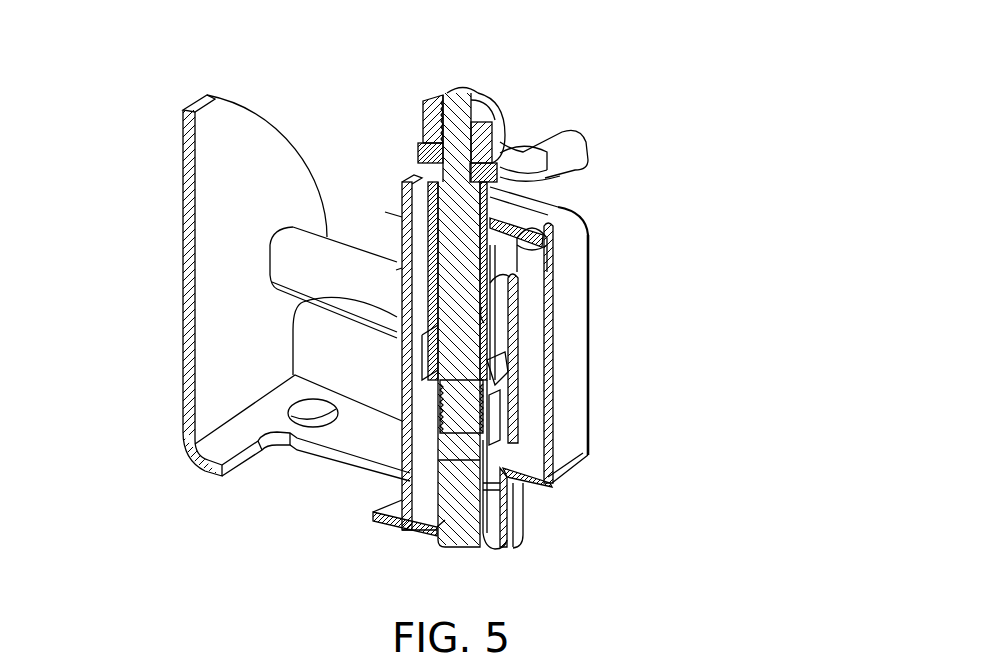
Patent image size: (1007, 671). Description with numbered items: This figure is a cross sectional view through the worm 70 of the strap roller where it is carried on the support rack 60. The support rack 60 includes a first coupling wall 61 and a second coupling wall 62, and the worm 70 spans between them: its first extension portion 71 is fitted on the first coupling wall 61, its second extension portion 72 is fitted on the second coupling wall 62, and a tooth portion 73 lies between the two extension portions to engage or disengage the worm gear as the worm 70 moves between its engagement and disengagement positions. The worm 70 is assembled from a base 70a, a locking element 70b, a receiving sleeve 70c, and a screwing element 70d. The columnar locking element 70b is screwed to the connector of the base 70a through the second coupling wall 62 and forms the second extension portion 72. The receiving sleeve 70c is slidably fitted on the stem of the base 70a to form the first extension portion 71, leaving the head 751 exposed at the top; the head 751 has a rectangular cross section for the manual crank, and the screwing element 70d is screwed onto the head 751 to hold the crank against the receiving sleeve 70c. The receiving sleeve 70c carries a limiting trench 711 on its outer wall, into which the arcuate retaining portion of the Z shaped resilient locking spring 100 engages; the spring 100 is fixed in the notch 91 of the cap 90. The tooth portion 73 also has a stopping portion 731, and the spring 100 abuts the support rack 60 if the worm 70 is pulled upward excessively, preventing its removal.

The worm 70 is at (463, 86).
The head 751 is at (422, 125).
The first coupling wall 61 is at (402, 218).
The first extension portion 71 is at (398, 277).
The stopping portion 731 is at (397, 272).
The screwing element 70d is at (500, 130).
The base 70a is at (545, 225).
The resilient locking spring 100 is at (560, 242).
The notch 91 is at (492, 256).
The receiving sleeve 70c is at (520, 303).
The limiting trench 711 is at (490, 327).
The support rack 60 is at (527, 358).
The tooth portion 73 is at (510, 377).
The cap 90 is at (595, 437).
The second coupling wall 62 is at (380, 446).
The second extension portion 72 is at (388, 452).
The locking element 70b is at (460, 525).